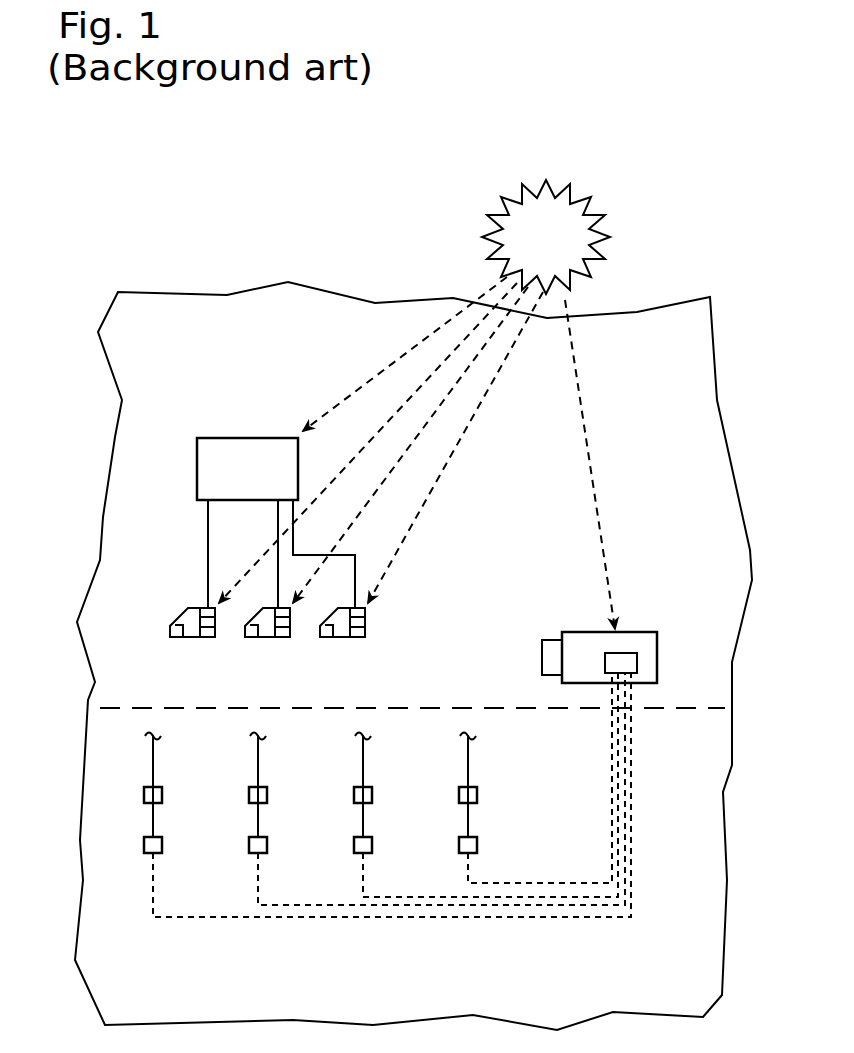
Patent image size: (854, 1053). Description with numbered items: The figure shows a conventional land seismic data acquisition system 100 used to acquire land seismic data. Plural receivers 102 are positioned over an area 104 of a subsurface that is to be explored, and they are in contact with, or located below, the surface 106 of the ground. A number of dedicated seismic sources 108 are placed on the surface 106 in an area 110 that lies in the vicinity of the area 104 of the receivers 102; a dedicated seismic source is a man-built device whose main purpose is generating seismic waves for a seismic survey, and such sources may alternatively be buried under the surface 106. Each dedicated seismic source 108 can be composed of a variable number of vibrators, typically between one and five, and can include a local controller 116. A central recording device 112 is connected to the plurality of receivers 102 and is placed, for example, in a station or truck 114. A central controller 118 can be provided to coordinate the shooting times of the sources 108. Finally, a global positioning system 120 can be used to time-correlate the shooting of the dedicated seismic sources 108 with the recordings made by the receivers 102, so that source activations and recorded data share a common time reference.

The system 100 is at (448, 146).
The receivers 102 is at (459, 843).
The area 104 is at (687, 918).
The surface 106 is at (76, 645).
The dedicated seismic sources 108 is at (190, 638).
The area 110 is at (707, 500).
The central recording device 112 is at (630, 665).
The station/truck 114 is at (645, 629).
The local controller 116 is at (210, 638).
The central controller 118 is at (210, 438).
The global positioning system (GPS) 120 is at (582, 198).